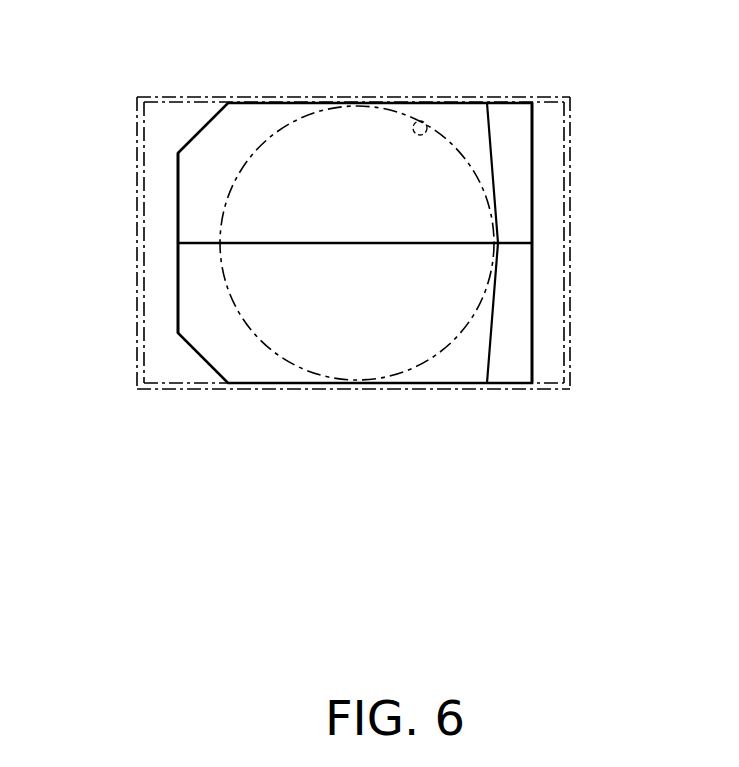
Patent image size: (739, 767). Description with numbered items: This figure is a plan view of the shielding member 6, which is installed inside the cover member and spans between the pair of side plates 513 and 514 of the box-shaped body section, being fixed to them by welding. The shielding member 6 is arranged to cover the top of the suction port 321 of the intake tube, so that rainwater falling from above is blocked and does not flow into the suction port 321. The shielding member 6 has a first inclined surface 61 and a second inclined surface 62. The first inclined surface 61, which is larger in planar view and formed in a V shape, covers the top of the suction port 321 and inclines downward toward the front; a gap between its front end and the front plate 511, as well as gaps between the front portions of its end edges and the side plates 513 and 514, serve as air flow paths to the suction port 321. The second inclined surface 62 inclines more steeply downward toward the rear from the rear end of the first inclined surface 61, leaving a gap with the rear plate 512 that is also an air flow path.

The shielding member 6 is at (174, 173).
The first inclined surface 61 is at (206, 221).
The second inclined surface 62 is at (514, 152).
The suction port 321 is at (440, 128).
The front plate 511 is at (137, 338).
The rear plate 512 is at (570, 338).
The side plate 513 is at (212, 389).
The side plate 514 is at (330, 97).